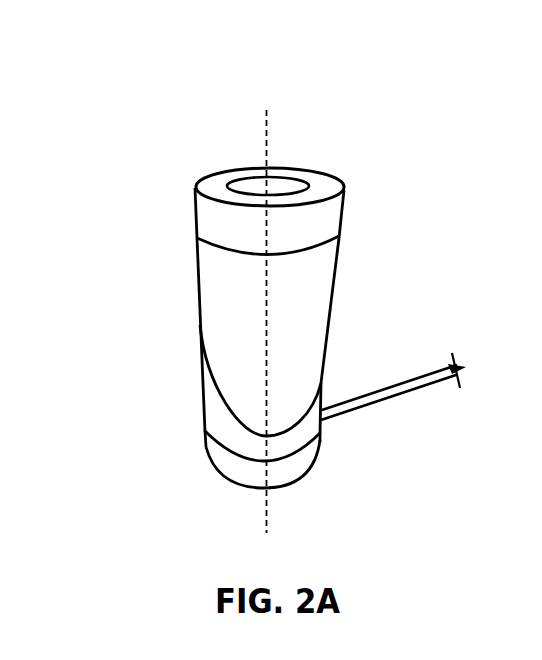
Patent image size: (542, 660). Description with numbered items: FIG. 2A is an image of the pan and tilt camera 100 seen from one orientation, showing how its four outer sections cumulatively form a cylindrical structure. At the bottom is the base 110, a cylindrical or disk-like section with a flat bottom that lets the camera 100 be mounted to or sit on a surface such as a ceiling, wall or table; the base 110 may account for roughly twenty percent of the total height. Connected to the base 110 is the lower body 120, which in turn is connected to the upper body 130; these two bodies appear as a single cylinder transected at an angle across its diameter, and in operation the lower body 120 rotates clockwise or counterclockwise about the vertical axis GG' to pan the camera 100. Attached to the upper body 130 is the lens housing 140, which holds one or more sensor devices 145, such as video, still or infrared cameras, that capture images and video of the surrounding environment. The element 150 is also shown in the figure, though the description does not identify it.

The pan and tilt camera 100 is at (162, 52).
The base 110 is at (210, 463).
The lower body 120 is at (207, 400).
The upper body 130 is at (218, 322).
The lens housing 140 is at (205, 222).
The sensor device 145 is at (290, 186).
The side tube 150 is at (397, 398).